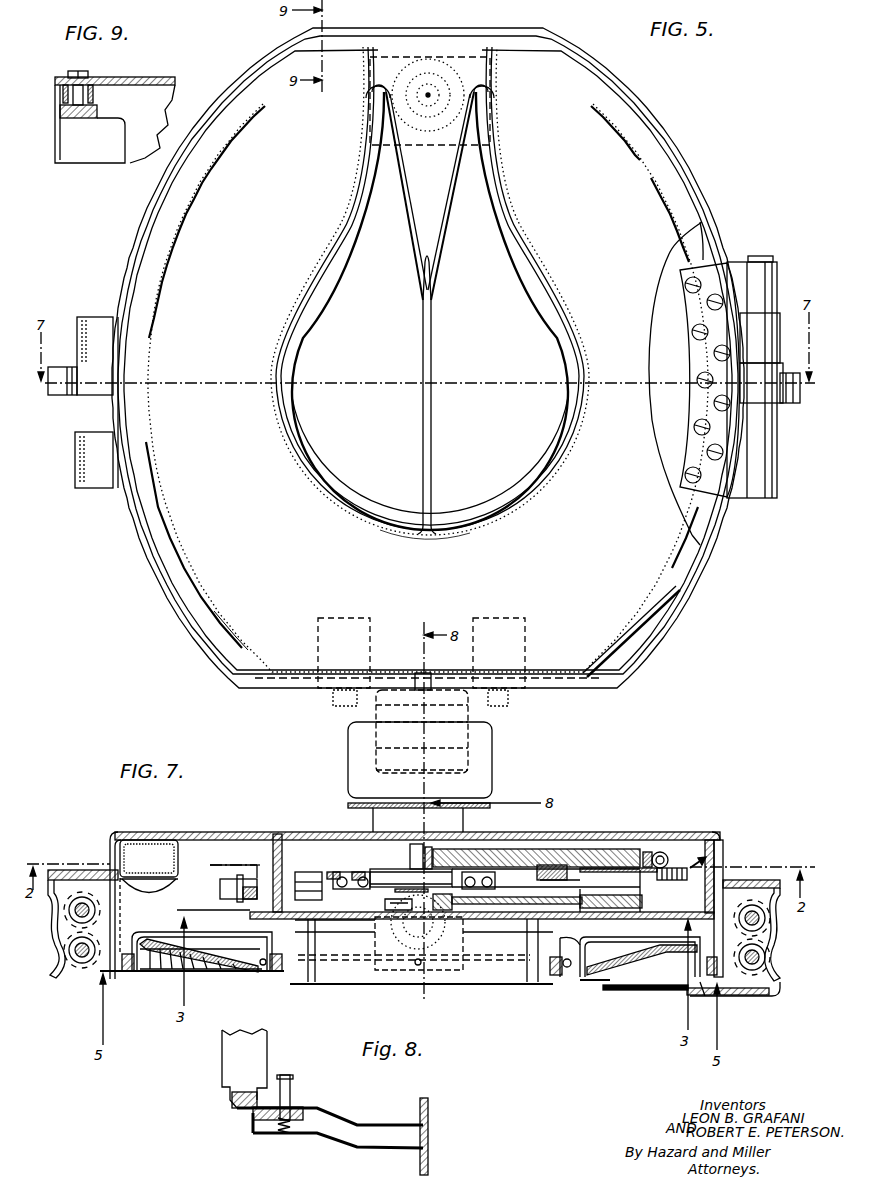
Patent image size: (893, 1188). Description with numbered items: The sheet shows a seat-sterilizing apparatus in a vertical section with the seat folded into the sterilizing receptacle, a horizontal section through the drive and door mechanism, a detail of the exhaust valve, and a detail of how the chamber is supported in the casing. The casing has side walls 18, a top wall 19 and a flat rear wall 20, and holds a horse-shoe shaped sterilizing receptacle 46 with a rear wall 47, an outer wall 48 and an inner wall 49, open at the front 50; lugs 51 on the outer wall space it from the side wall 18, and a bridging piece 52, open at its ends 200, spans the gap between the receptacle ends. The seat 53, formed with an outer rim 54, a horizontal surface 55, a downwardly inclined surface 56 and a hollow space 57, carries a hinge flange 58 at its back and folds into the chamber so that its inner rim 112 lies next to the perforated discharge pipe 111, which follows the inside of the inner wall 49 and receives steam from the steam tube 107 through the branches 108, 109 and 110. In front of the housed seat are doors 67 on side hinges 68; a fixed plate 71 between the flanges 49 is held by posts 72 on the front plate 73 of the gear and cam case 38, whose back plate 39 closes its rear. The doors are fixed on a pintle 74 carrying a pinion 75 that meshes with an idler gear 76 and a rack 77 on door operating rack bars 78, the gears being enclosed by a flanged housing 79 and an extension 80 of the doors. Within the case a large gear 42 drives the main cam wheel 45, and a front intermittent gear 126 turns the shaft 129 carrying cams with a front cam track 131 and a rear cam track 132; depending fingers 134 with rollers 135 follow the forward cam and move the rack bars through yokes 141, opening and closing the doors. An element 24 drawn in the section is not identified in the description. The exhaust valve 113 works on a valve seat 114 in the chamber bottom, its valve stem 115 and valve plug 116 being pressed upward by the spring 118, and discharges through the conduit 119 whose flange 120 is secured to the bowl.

In FIG. 5, the side walls 18 is at (675, 153).
In FIG. 9, the top wall 19 is at (148, 77).
In FIG. 7, the rear wall 20 is at (585, 831).
In FIG. 7, the roller compartment 24 is at (165, 852).
In FIG. 7, the gear and cam case 38 is at (720, 845).
In FIG. 7, the back plate 39 is at (604, 840).
In FIG. 7, the large gear 42 is at (558, 880).
In FIG. 7, the main cam wheel 45 is at (632, 852).
In FIG. 7, the sterilizing receptacle 46 is at (591, 982).
In FIG. 7, the rear wall 47 is at (616, 935).
In FIG. 9, the outer wall 48 is at (90, 122).
In FIG. 7, the outer wall 48 is at (733, 993).
In FIG. 7, the inner wall 49 is at (558, 978).
In FIG. 7, the front 50 is at (152, 974).
In FIG. 5, the lugs 51 is at (674, 602).
In FIG. 9, the lugs 51 is at (92, 75).
In FIG. 5, the bridging piece 52 is at (472, 62).
In FIG. 5, the seat 53 is at (222, 622).
In FIG. 7, the seat 53 is at (212, 966).
In FIG. 7, the outer rim 54 is at (137, 972).
In FIG. 7, the horizontal surface 55 is at (165, 962).
In FIG. 7, the downwardly inclined surface 56 is at (228, 966).
In FIG. 7, the hollow space 57 is at (672, 962).
In FIG. 5, the hinge flange 58 is at (520, 641).
In FIG. 5, the doors 67 is at (672, 498).
In FIG. 7, the doors 67 is at (640, 991).
In FIG. 5, the side hinges 68 is at (766, 284).
In FIG. 7, the fixed plate 71 is at (513, 987).
In FIG. 7, the posts 72 is at (316, 947).
In FIG. 7, the front plate 73 is at (658, 915).
In FIG. 7, the pintle 74 is at (80, 963).
In FIG. 7, the pinion 75 is at (64, 955).
In FIG. 7, the idler gear 76 is at (64, 912).
In FIG. 7, the rack 77 is at (82, 872).
In FIG. 7, the door operating rack bars 78 is at (292, 880).
In FIG. 7, the flanged housing 79 is at (50, 937).
In FIG. 7, the extension 80 is at (768, 996).
In FIG. 5, the steam tube 107 is at (427, 255).
In FIG. 5, the branch 108 is at (405, 212).
In FIG. 5, the branch 109 is at (453, 218).
In FIG. 5, the branch 110 is at (433, 422).
In FIG. 7, the branch 110 is at (420, 965).
In FIG. 5, the perforated discharge pipe 111 is at (477, 519).
In FIG. 7, the perforated discharge pipe 111 is at (568, 969).
In FIG. 7, the inner rim 112 is at (263, 967).
In FIG. 5, the outlet steam and air exhaust valve 113 is at (470, 712).
In FIG. 8, the outlet steam and air exhaust valve 113 is at (238, 1121).
In FIG. 8, the valve seat 114 is at (320, 1111).
In FIG. 8, the valve stem 115 is at (292, 1083).
In FIG. 8, the valve plug 116 is at (301, 1108).
In FIG. 8, the spring 118 is at (282, 1135).
In FIG. 8, the conduit 119 is at (373, 1138).
In FIG. 7, the flange 120 is at (488, 809).
In FIG. 8, the flange 120 is at (430, 1112).
In FIG. 7, the front intermittent gear 126 is at (503, 904).
In FIG. 7, the shaft 129 is at (428, 846).
In FIG. 7, the front cam track 131 is at (384, 890).
In FIG. 7, the rear cam track 132 is at (392, 871).
In FIG. 7, the depending fingers 134 is at (364, 867).
In FIG. 7, the roller 135 is at (343, 871).
In FIG. 7, the yoke 141 is at (330, 873).
In FIG. 5, the ends 200 is at (375, 78).